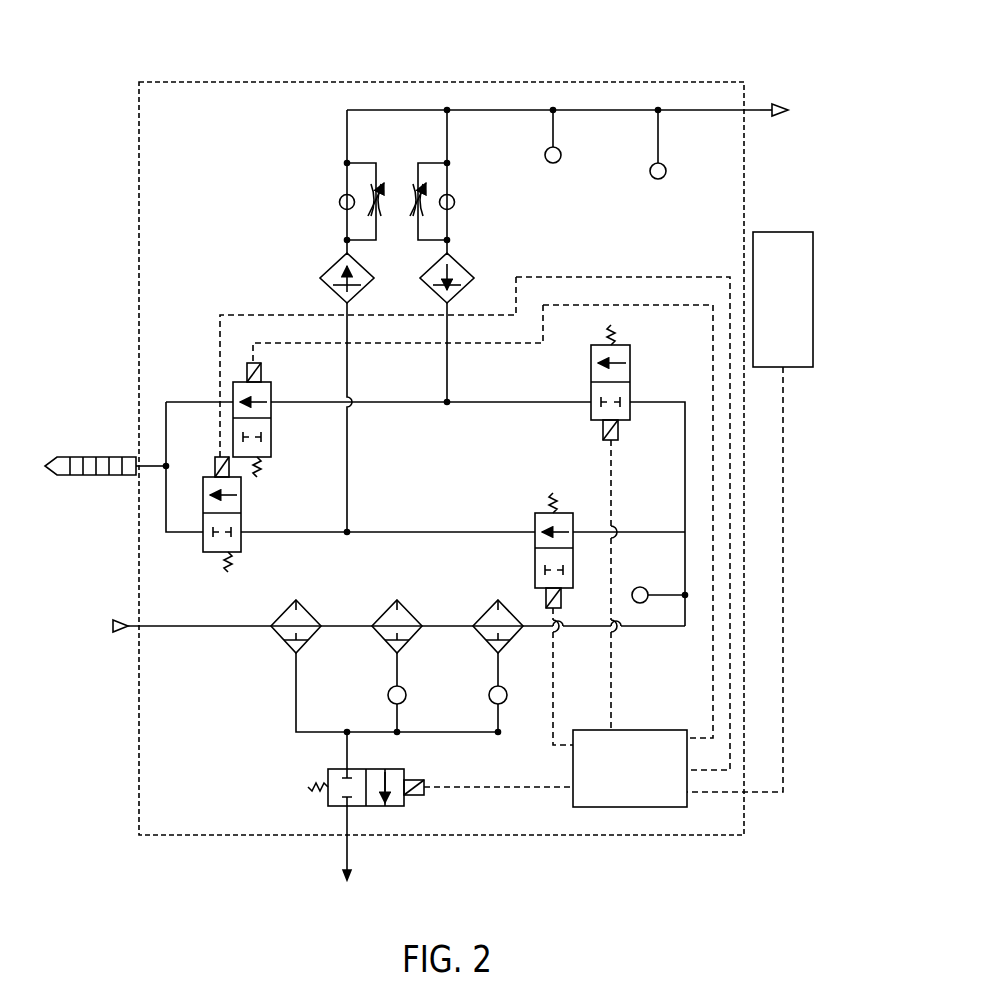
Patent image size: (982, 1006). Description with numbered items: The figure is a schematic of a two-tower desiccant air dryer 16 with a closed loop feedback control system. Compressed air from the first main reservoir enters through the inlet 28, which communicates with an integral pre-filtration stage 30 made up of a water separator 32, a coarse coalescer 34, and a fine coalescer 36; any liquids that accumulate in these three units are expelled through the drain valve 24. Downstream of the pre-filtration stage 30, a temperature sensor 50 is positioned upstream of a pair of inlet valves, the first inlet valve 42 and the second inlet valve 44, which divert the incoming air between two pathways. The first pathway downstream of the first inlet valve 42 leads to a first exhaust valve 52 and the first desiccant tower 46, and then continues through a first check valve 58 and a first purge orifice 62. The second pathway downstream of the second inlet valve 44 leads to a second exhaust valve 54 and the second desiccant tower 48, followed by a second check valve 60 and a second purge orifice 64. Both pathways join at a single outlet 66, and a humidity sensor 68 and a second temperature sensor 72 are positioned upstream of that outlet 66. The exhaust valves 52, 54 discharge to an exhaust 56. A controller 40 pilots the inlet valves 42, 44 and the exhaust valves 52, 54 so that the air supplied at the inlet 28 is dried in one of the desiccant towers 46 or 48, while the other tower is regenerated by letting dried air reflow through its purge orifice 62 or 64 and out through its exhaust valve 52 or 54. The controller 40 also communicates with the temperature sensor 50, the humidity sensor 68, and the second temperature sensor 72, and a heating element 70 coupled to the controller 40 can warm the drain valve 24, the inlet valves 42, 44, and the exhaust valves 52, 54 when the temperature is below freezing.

The two-tower desiccant air dryer 16 is at (446, 56).
The drain valve 24 is at (328, 770).
The inlet 28 is at (130, 636).
The pre-filtration stage 30 is at (262, 706).
The water separator 32 is at (308, 608).
The coarse coalescer 34 is at (408, 608).
The fine coalescer 36 is at (511, 634).
The controller 40 is at (650, 728).
The first inlet valve 42 is at (535, 520).
The second inlet valve 44 is at (591, 350).
The first desiccant tower 46 is at (325, 278).
The second desiccant tower 48 is at (466, 274).
The temperature sensor 50 is at (670, 600).
The first exhaust valve 52 is at (203, 540).
The second exhaust valve 54 is at (274, 447).
The exhaust silencer 56 is at (96, 455).
The first check valve 58 is at (340, 206).
The second check valve 60 is at (454, 206).
The first purge orifice 62 is at (368, 215).
The second purge orifice 64 is at (414, 220).
The outlet 66 is at (760, 104).
The humidity sensor 68 is at (662, 134).
The heating element 70 is at (795, 230).
The second temperature sensor 72 is at (560, 128).